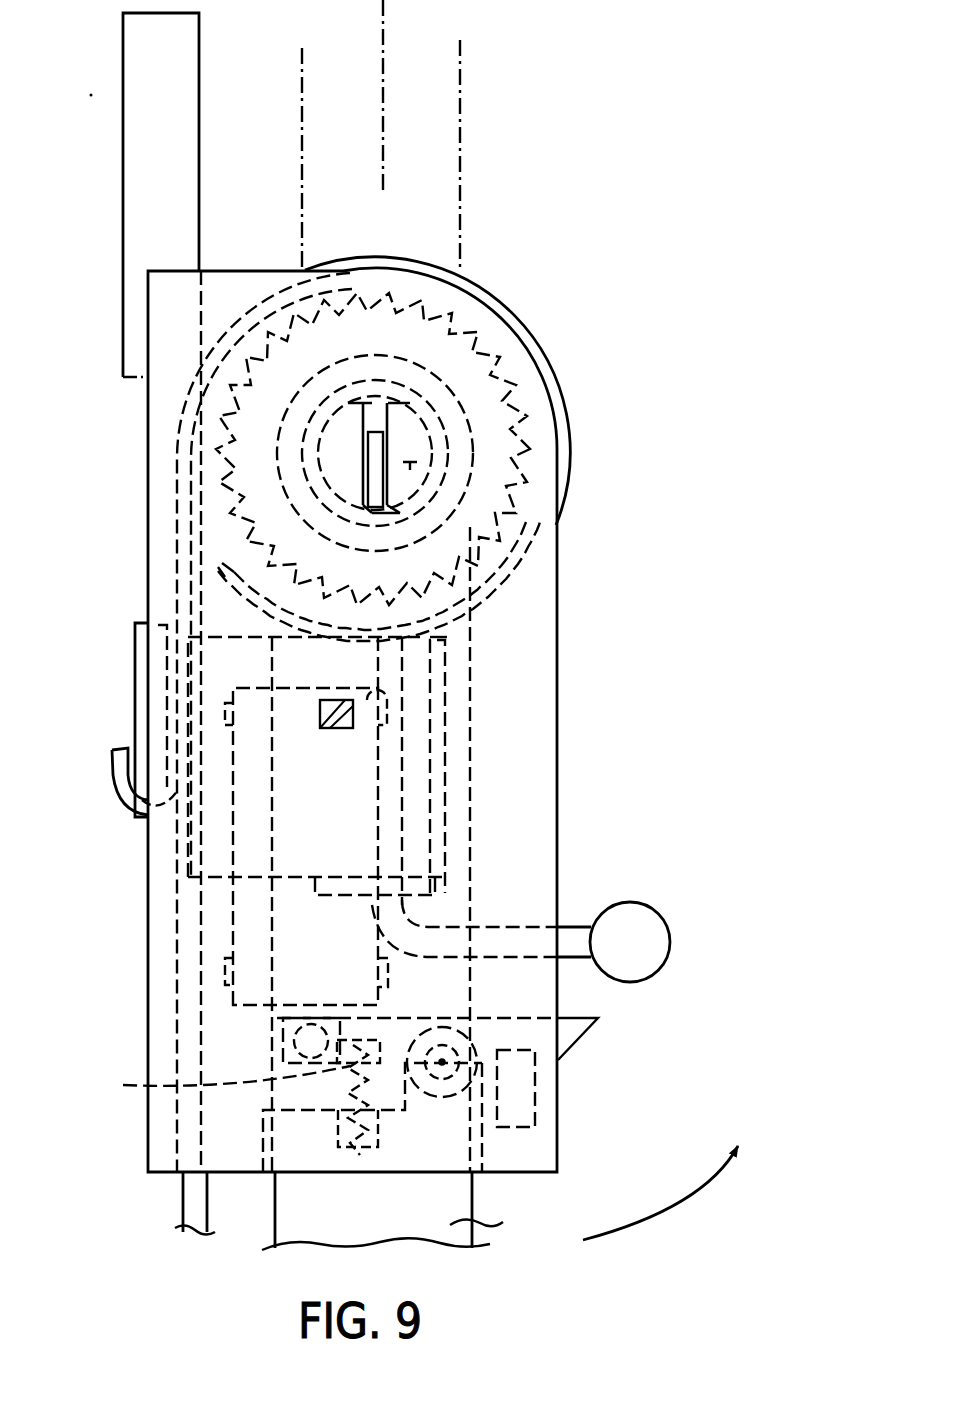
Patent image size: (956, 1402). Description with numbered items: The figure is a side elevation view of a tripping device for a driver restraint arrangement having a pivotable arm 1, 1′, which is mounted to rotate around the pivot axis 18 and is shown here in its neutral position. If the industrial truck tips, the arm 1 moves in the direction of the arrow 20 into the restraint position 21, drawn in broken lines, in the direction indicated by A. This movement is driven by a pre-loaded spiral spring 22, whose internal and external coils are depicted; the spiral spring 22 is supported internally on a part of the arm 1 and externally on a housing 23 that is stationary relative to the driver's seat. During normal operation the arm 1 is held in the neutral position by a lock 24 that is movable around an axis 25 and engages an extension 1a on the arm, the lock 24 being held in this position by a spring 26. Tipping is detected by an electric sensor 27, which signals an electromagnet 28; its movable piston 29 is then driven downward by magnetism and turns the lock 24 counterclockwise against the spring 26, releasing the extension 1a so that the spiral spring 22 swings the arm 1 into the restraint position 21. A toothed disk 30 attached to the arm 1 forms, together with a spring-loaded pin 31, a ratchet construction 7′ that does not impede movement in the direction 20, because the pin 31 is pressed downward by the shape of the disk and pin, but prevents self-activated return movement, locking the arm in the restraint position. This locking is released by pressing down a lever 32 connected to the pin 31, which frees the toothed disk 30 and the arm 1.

The arm 1 is at (354, 1211).
The extension 1a is at (565, 1140).
The arm 1′ is at (418, 466).
The ratchet construction 7′ is at (595, 467).
The direction arrow A is at (612, 488).
The pivot axis 18 is at (385, 447).
The arrow 20 is at (683, 1202).
The restraint position 21 is at (302, 106).
The spiral spring 22 is at (378, 392).
The housing 23 is at (162, 848).
The lock 24 is at (600, 1030).
The axis 25 is at (478, 1060).
The spring 26 is at (230, 1097).
The electric sensor 27 is at (322, 719).
The electromagnet 28 is at (333, 813).
The movable piston 29 is at (262, 1010).
The toothed disk 30 is at (405, 395).
The spring-loaded pin 31 is at (468, 624).
The lever 32 is at (625, 912).